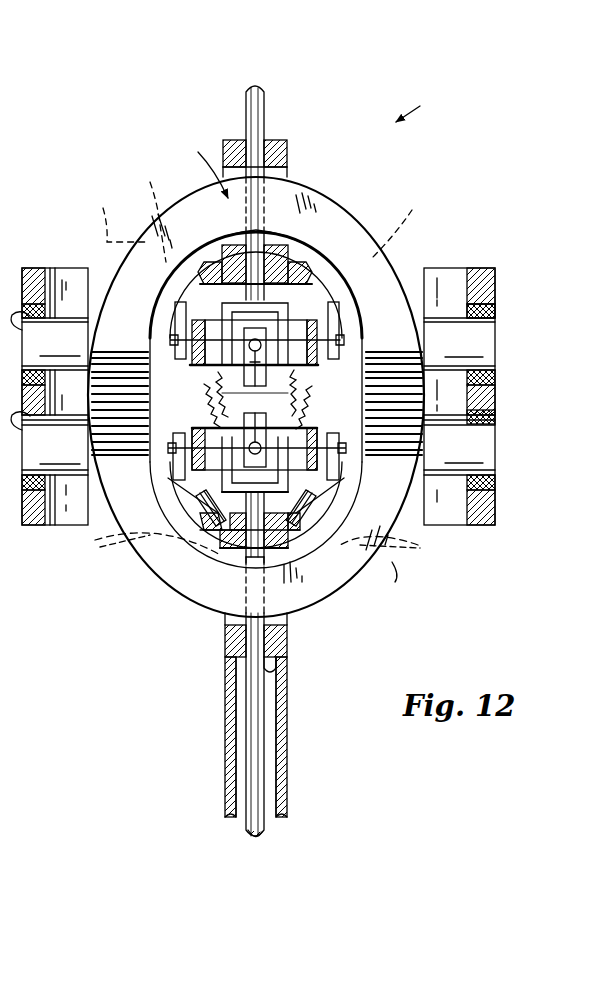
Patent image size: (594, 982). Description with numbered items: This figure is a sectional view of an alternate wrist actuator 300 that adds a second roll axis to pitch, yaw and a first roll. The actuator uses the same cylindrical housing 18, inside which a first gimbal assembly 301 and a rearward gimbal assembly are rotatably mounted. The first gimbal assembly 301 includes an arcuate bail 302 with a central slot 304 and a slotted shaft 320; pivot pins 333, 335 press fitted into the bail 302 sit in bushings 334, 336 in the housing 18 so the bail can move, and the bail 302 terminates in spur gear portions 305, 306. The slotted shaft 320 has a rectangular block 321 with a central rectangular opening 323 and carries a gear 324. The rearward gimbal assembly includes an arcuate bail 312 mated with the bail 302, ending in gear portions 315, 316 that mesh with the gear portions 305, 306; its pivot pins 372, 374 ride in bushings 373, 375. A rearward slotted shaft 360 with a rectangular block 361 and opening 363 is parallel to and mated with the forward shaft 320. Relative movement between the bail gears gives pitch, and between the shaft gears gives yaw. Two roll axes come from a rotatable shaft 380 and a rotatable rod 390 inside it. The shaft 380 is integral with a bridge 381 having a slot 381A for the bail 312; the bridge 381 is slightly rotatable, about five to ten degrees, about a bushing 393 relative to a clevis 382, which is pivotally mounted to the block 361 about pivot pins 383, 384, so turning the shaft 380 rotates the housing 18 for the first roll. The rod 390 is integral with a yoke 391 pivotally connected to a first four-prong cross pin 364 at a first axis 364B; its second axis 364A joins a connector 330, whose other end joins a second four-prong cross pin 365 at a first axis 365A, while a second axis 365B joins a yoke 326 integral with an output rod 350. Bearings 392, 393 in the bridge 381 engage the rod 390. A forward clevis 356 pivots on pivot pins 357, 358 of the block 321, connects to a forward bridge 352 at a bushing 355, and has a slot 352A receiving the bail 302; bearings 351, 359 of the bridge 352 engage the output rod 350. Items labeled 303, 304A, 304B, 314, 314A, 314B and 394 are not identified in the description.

The wrist actuator 300 is at (425, 108).
The first gimbal assembly 301 is at (196, 170).
The arcuate bail 302 is at (300, 200).
The hub 303 is at (256, 400).
The slot 304 is at (152, 190).
The phantom envelope portion 304A is at (103, 208).
The phantom envelope portion 304B is at (418, 212).
The gear portion 305 is at (138, 328).
The gear portion 306 is at (408, 362).
The arcuate bail 312 is at (397, 580).
The rotor envelope 314 is at (150, 582).
The rotor envelope portion 314A is at (100, 546).
The rotor envelope portion 314B is at (413, 548).
The gear portion 315 is at (100, 448).
The gear portion 316 is at (415, 462).
The cylindrical housing 18 is at (40, 265).
The slotted shaft 320 is at (284, 362).
The rectangular block 321 is at (300, 362).
The rectangular opening 323 is at (318, 272).
The gear 324 is at (222, 393).
The yoke 326 is at (222, 258).
The connector 330 is at (292, 382).
The pivot pin 333 is at (59, 347).
The bushing 334 is at (36, 324).
The pivot pin 335 is at (464, 347).
The bushing 336 is at (495, 310).
The output rod 350 is at (266, 92).
The bearing 351 is at (270, 146).
The forward bridge 352 is at (238, 138).
The slot 352A is at (287, 172).
The bushing 355 is at (290, 262).
The forward clevis 356 is at (322, 285).
The pivot pin 357 is at (200, 350).
The pivot pin 358 is at (320, 330).
The bearing 359 is at (244, 244).
The slotted shaft 360 is at (200, 497).
The rectangular block 361 is at (185, 472).
The opening 363 is at (320, 462).
The first four-prong cross pin 364 is at (300, 396).
The second axis 364A is at (222, 546).
The first axis 364B is at (330, 455).
The second four-prong cross pin 365 is at (186, 320).
The first axis 365A is at (306, 268).
The second axis 365B is at (172, 336).
The pivot pin 372 is at (59, 455).
The bushing 373 is at (36, 427).
The pivot pin 374 is at (464, 453).
The bushing 375 is at (497, 415).
The rotatable shaft 380 is at (228, 700).
The bridge 381 is at (288, 632).
The slot 381A is at (225, 628).
The clevis 382 is at (300, 488).
The pivot pin 383 is at (190, 440).
The pivot pin 384 is at (360, 432).
The rotatable rod 390 is at (264, 832).
The yoke 391 is at (298, 528).
The bearing 392 is at (278, 668).
The bushing 393 is at (296, 542).
The shaft sleeve 394 is at (242, 560).